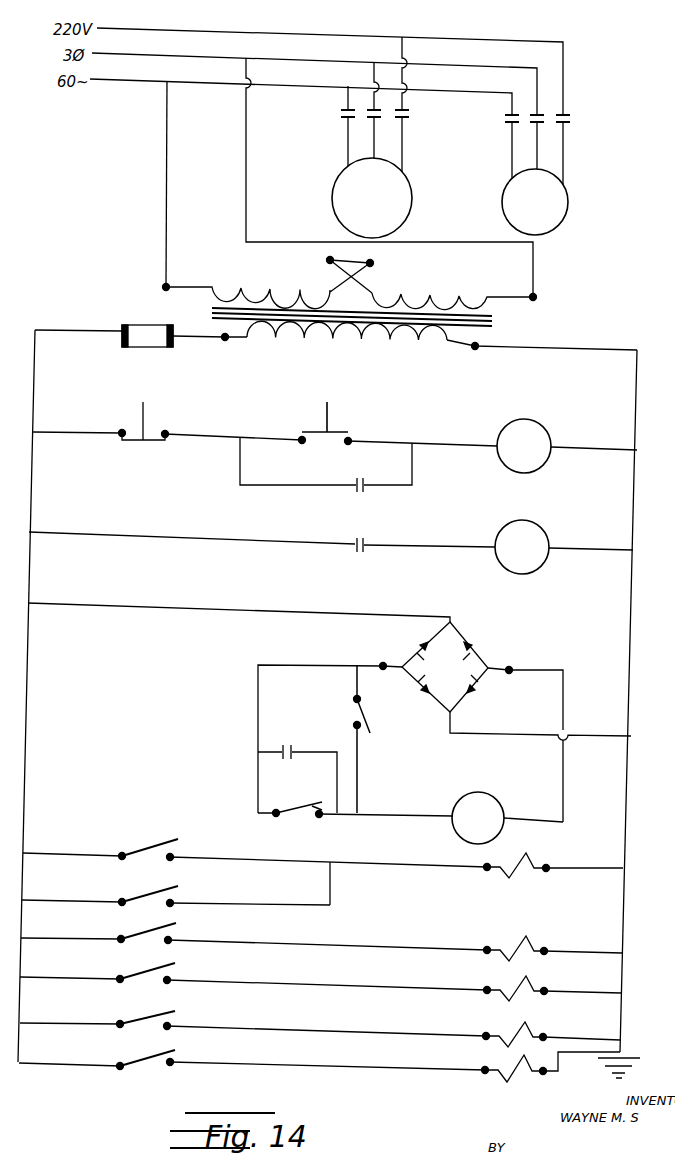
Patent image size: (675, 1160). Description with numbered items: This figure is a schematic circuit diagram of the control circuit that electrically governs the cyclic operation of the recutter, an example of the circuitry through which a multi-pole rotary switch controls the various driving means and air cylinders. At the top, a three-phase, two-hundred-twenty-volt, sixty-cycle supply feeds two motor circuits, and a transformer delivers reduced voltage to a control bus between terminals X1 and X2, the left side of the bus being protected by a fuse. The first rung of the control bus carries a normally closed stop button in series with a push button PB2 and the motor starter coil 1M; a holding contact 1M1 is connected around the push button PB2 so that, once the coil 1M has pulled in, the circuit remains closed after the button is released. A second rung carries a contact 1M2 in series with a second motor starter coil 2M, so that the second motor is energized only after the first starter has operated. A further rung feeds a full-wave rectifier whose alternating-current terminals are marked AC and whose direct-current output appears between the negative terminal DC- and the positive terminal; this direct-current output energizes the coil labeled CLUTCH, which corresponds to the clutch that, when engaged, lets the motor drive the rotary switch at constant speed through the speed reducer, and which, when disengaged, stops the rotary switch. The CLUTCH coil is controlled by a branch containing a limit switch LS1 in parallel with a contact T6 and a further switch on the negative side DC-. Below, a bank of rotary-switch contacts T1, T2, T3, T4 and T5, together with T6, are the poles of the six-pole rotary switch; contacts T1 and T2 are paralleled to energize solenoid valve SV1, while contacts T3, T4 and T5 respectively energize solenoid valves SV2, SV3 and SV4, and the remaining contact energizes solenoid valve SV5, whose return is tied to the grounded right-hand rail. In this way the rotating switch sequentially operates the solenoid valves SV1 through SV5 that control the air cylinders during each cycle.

The transformer secondary terminal X1 is at (210, 348).
The transformer secondary terminal X2 is at (542, 354).
The push button PB2 is at (325, 414).
The motor starter coil 1M is at (492, 446).
The holding contact 1M1 is at (326, 464).
The contact 1M2 is at (211, 535).
The motor starter coil 2M is at (498, 547).
The rectifier AC terminals AC is at (516, 677).
The rectifier DC negative terminal DC- is at (330, 731).
The timer contact T6 is at (252, 898).
The limit switch LS1 is at (355, 801).
The clutch coil CLUTCH is at (507, 818).
The timer contact T1 is at (255, 866).
The timer contact T2 is at (176, 891).
The timer contact T3 is at (254, 931).
The timer contact T4 is at (253, 972).
The timer contact T5 is at (253, 1017).
The solenoid valve SV1 is at (554, 862).
The solenoid valve SV2 is at (553, 946).
The solenoid valve SV3 is at (553, 987).
The solenoid valve SV4 is at (552, 1033).
The solenoid valve SV5 is at (549, 1067).